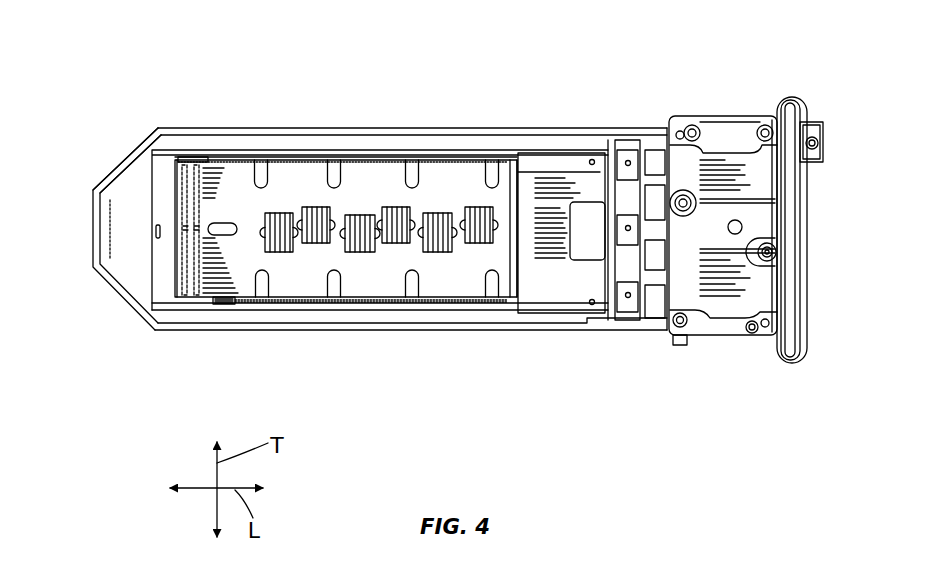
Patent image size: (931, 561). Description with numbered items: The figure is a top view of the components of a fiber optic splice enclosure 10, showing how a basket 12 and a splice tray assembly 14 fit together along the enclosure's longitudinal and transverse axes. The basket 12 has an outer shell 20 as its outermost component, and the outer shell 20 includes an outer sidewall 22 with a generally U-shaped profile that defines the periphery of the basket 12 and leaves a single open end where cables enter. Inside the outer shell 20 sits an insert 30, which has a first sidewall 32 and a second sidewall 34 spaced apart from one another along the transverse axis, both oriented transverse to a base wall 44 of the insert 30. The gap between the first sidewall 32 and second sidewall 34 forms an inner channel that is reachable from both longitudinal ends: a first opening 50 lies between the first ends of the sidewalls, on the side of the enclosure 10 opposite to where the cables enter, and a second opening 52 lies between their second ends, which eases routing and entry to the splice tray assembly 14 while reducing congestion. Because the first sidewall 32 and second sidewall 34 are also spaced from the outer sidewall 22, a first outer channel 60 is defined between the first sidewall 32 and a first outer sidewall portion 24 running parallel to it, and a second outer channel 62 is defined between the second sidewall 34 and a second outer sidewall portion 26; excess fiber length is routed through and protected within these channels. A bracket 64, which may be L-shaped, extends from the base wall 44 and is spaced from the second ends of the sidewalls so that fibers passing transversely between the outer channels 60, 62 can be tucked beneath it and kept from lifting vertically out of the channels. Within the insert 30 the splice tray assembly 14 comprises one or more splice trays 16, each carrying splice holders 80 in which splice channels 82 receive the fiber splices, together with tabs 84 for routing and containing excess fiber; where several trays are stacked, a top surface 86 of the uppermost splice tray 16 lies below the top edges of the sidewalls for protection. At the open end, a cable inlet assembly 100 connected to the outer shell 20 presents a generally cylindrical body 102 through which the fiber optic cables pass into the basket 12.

The fiber optic splice enclosure 10 is at (505, 63).
The basket 12 is at (333, 113).
The splice tray assembly 14 is at (272, 150).
The splice tray 16 is at (300, 155).
The outer shell 20 is at (115, 160).
The outer sidewall 22 is at (178, 128).
The first outer sidewall portion 24 is at (333, 327).
The second outer sidewall portion 26 is at (447, 130).
The insert 30 is at (532, 153).
The first sidewall 32 is at (232, 307).
The second sidewall 34 is at (197, 150).
The base wall 44 is at (532, 265).
The first opening 50 is at (140, 212).
The second opening 52 is at (520, 200).
The first outer channel 60 is at (278, 317).
The second outer channel 62 is at (330, 145).
The bracket 64 is at (590, 222).
The splice holder 80 is at (262, 215).
The splice channel 82 is at (278, 212).
The tab 84 is at (342, 168).
The top surface 86 is at (427, 160).
The cable inlet assembly 100 is at (705, 70).
The body 102 is at (740, 150).